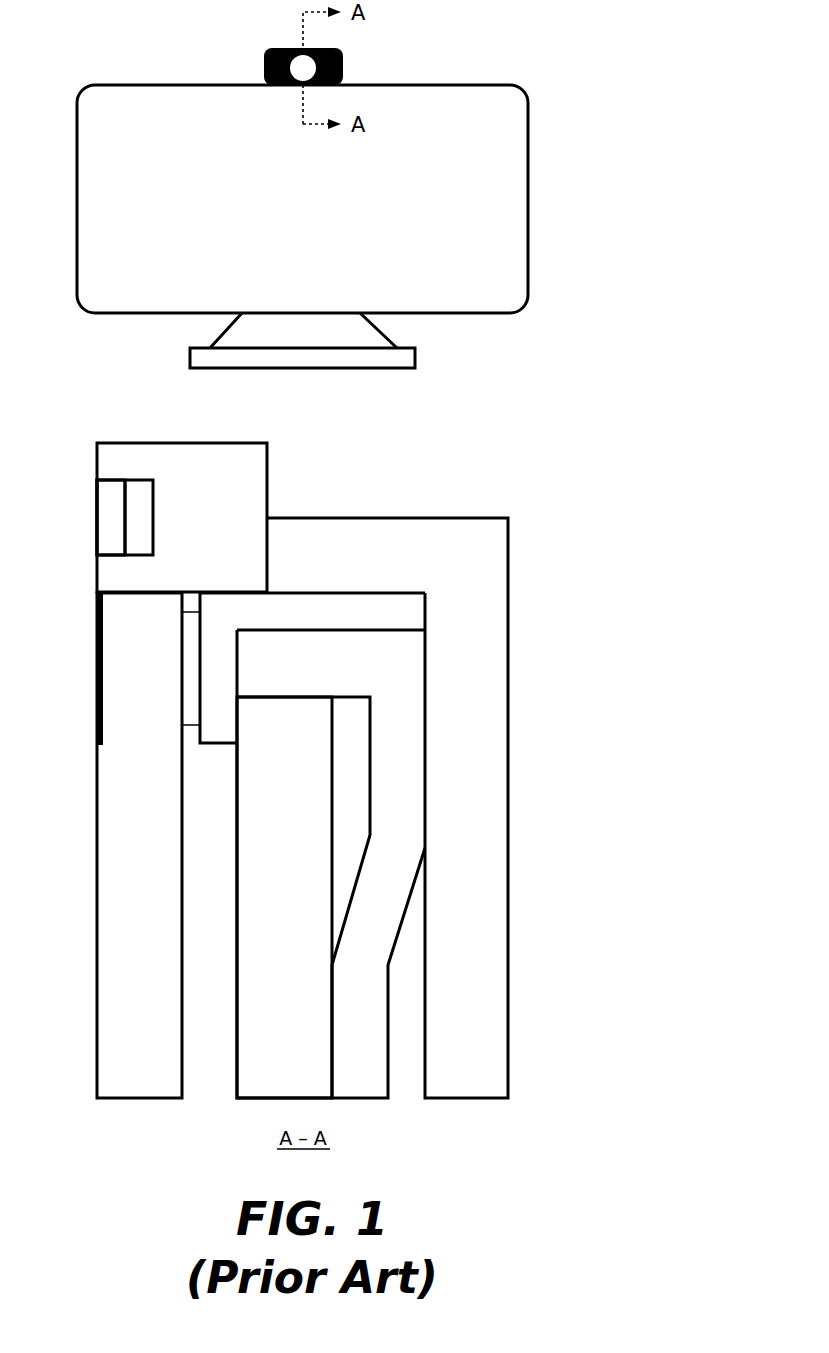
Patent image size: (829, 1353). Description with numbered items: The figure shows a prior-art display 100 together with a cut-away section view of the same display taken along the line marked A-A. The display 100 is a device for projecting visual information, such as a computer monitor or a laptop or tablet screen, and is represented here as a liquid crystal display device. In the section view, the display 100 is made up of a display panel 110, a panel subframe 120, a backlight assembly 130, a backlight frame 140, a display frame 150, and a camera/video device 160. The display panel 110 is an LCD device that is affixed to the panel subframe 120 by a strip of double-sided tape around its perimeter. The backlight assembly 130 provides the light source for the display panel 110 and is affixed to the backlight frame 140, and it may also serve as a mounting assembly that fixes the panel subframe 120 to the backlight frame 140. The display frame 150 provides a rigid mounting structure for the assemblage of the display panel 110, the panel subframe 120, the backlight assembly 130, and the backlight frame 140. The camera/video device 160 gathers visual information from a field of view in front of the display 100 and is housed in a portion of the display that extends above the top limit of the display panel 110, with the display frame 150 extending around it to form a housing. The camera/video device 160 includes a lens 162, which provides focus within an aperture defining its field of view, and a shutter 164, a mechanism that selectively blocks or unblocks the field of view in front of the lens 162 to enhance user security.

The display 100 is at (128, 85).
The display panel 110 is at (123, 984).
The panel subframe 120 is at (403, 622).
The backlight assembly 130 is at (268, 971).
The backlight frame 140 is at (315, 687).
The display frame 150 is at (450, 984).
The camera/video device 160 is at (280, 48).
The lens 162 is at (138, 480).
The shutter 164 is at (97, 495).